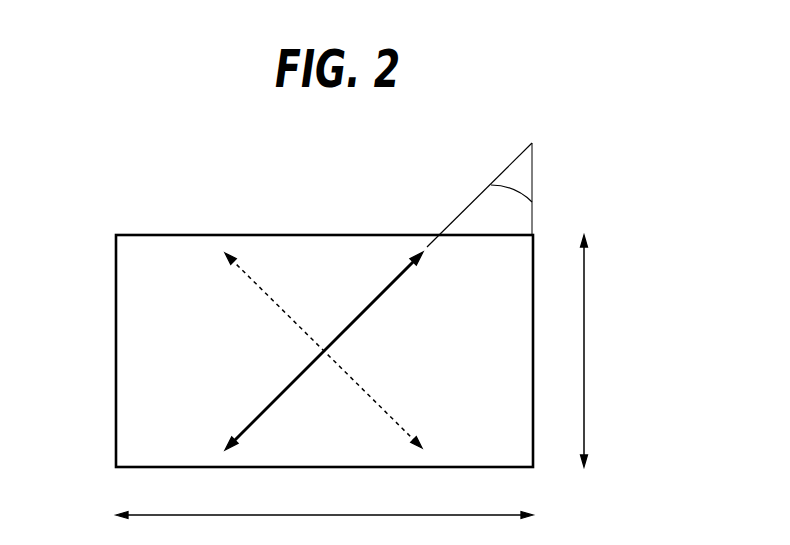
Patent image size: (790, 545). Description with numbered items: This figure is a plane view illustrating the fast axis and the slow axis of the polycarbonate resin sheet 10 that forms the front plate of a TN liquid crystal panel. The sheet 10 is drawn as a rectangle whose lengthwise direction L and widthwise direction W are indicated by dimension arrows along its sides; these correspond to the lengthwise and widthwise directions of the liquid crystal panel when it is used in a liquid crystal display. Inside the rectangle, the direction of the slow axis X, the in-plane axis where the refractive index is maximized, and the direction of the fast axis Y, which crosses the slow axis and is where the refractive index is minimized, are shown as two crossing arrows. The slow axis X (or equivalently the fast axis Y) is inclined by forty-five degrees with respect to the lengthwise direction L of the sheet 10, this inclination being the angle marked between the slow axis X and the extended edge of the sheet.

The polycarbonate resin sheet 10 is at (323, 252).
The direction of slow axis X is at (324, 351).
The direction of fast axis Y is at (323, 350).
The lengthwise direction of polycarbonate resin sheet L is at (592, 351).
The widthwise direction of polycarbonate resin sheet W is at (324, 529).